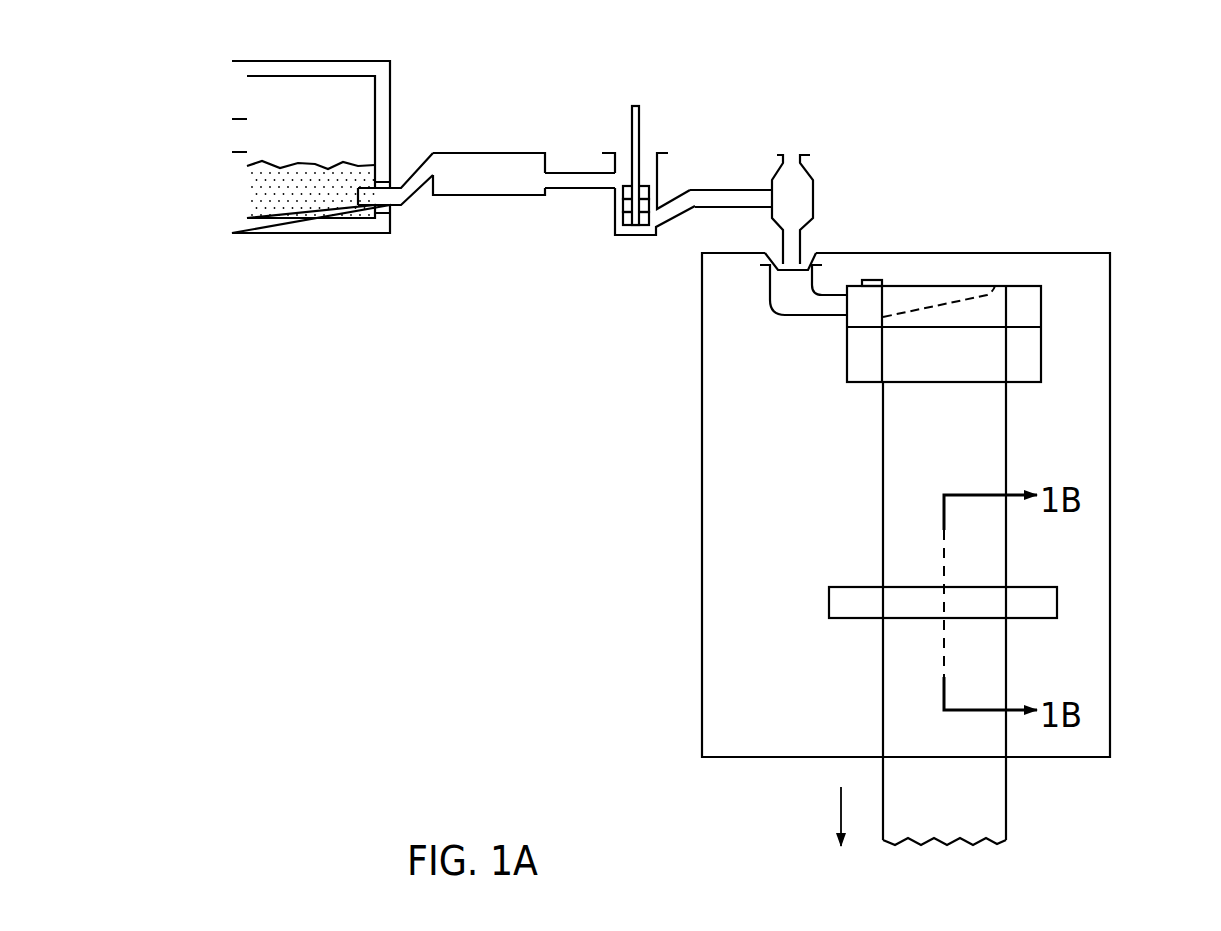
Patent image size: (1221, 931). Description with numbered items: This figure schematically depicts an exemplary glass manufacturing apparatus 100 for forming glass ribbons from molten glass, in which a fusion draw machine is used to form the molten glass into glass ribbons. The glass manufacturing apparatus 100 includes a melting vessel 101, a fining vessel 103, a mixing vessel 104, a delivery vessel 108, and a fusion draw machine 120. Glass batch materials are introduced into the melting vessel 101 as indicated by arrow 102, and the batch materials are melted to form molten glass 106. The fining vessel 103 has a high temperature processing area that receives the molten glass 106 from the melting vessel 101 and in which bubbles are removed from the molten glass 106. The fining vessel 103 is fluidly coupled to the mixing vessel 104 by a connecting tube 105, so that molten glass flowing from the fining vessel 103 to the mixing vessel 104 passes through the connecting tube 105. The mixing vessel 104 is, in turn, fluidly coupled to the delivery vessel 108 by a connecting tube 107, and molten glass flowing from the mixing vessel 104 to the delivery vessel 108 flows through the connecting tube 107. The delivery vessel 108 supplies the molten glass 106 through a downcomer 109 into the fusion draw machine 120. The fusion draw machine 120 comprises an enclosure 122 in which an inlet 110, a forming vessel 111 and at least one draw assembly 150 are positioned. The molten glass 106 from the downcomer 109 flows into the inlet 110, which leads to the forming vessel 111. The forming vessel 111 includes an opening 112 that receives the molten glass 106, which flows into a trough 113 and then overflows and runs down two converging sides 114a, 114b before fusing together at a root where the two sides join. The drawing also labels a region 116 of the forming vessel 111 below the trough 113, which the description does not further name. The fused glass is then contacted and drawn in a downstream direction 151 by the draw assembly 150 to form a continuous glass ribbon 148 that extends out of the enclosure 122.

The glass manufacturing apparatus 100 is at (1090, 135).
The melting vessel 101 is at (232, 86).
The arrow 102 is at (237, 135).
The fining vessel 103 is at (473, 153).
The mixing vessel 104 is at (658, 178).
The connecting tube 105 is at (569, 190).
The molten glass 106 is at (346, 167).
The connecting tube 107 is at (708, 225).
The delivery vessel 108 is at (816, 198).
The downcomer 109 is at (803, 243).
The inlet 110 is at (774, 312).
The forming vessel 111 is at (1041, 300).
The opening 112 is at (846, 320).
The trough 113 is at (946, 292).
The converging side 114a is at (893, 365).
The converging side 114b is at (1041, 352).
The mold cavity 116 is at (923, 383).
The fusion draw machine 120 is at (1102, 235).
The enclosure 122 is at (702, 386).
The glass ribbon 148 is at (1006, 797).
The draw assembly 150 is at (858, 578).
The downstream direction 151 is at (841, 810).